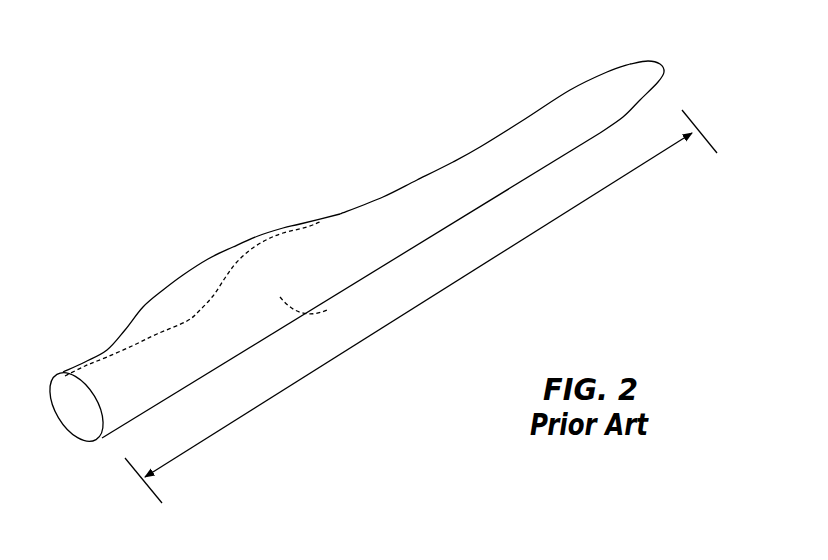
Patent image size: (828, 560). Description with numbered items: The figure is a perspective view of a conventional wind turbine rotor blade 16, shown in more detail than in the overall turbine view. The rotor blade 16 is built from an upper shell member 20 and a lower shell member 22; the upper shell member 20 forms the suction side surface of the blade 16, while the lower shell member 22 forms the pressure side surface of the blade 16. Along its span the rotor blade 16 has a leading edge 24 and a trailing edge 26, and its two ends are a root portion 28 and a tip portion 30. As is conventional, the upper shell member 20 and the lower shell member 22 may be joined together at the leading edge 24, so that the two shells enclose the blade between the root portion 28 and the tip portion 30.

The rotor blade 16 is at (378, 274).
The upper shell member 20 is at (213, 312).
The lower shell member 22 is at (316, 309).
The leading edge 24 is at (435, 233).
The trailing edge 26 is at (453, 165).
The root portion 28 is at (110, 375).
The tip portion 30 is at (643, 78).